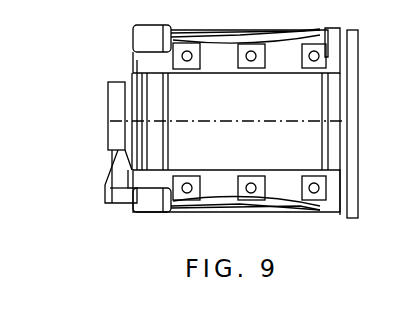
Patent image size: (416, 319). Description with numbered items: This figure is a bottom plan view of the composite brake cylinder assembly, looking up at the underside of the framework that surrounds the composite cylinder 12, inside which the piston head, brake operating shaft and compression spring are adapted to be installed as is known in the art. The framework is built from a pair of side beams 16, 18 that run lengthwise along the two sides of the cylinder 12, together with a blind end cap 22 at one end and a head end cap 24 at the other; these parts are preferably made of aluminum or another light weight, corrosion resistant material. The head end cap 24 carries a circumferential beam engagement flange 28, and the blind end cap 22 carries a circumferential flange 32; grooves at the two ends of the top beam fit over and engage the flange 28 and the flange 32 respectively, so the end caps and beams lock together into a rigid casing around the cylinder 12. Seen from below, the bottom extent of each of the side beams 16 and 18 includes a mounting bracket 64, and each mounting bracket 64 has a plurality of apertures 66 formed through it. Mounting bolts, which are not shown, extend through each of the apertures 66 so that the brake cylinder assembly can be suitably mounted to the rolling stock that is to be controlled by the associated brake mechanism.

The composite cylinder 12 is at (250, 113).
The side beam 16 is at (305, 27).
The side beam 18 is at (292, 212).
The blind end cap 22 is at (122, 70).
The head end cap 24 is at (358, 70).
The circumferential beam engagement flange 28 is at (320, 99).
The circumferential flange 32 is at (166, 100).
The mounting bracket 64 is at (255, 75).
The apertures 66 is at (196, 45).